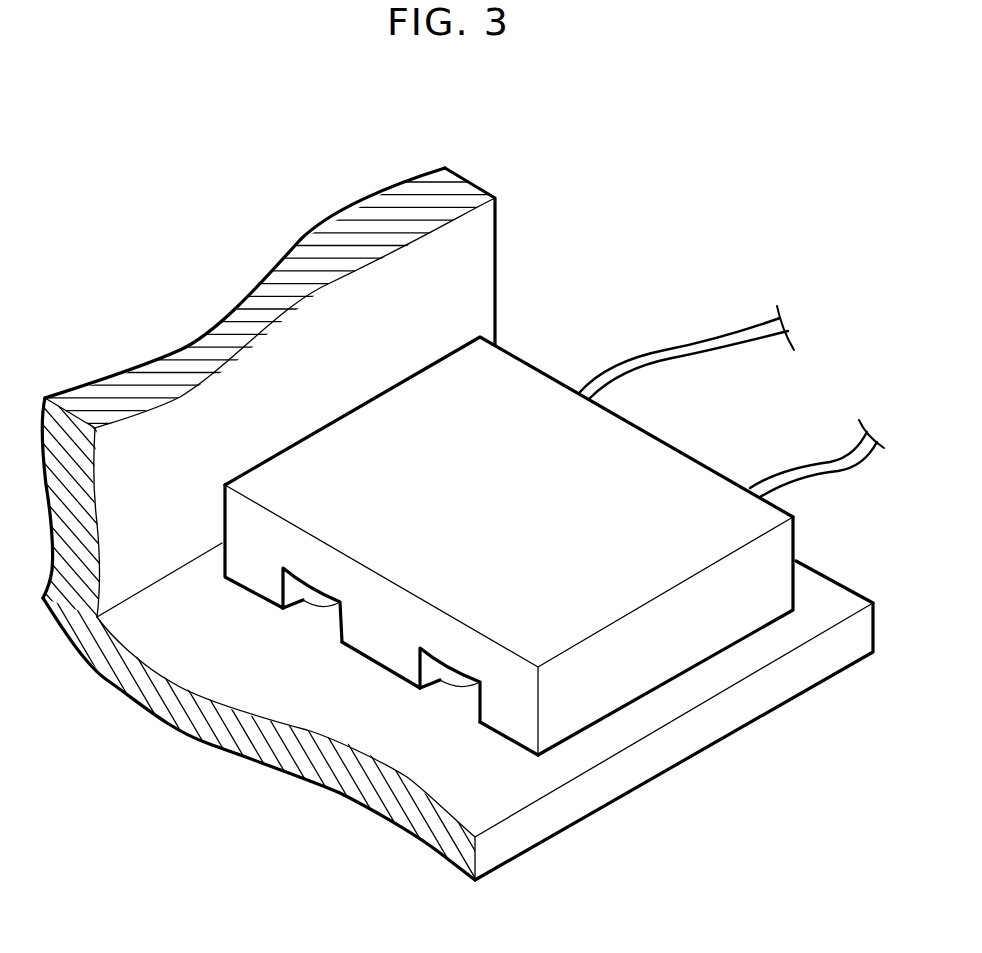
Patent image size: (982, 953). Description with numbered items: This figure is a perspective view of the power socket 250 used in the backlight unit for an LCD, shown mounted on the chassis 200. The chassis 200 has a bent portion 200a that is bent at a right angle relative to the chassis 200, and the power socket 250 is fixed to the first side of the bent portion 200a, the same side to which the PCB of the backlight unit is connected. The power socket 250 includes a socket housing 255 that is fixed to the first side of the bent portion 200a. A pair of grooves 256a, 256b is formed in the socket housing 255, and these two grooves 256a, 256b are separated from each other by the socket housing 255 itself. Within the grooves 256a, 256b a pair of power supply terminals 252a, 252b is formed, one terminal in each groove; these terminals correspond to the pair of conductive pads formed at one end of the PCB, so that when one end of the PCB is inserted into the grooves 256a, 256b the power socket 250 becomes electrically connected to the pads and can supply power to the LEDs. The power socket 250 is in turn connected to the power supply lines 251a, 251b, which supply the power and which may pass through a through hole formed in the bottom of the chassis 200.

The chassis 200 is at (508, 262).
The bent portion 200a is at (525, 790).
The power socket 250 is at (515, 545).
The socket housing 255 is at (533, 398).
The power supply line 251a is at (697, 347).
The power supply line 251b is at (813, 472).
The power supply terminal 252a is at (305, 600).
The power supply terminal 252b is at (445, 684).
The groove 256a is at (340, 628).
The groove 256b is at (468, 710).